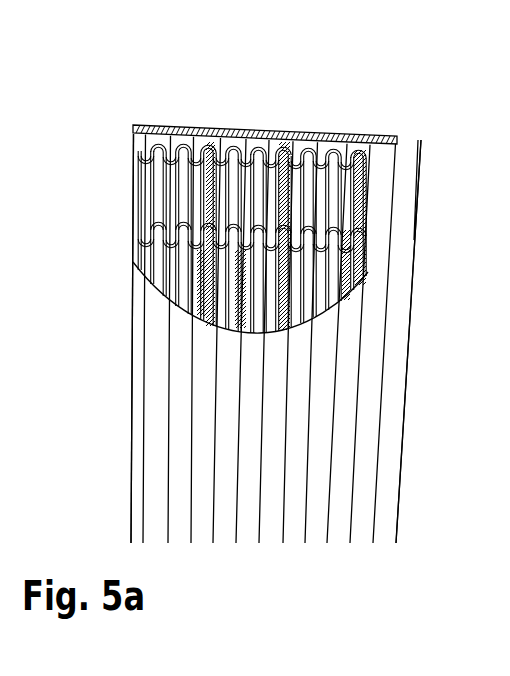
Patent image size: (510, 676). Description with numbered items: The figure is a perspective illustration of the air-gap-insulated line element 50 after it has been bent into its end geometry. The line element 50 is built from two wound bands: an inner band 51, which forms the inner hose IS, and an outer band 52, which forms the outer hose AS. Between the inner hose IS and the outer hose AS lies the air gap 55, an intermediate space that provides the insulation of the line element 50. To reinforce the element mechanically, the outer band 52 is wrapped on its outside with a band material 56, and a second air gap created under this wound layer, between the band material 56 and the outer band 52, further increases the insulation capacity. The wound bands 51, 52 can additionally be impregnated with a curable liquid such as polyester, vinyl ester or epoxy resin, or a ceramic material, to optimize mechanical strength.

The line element 50 is at (299, 56).
The inner band 51 is at (335, 230).
The outer band 52 is at (209, 130).
The air gap 55 is at (270, 180).
The band material 56 is at (403, 210).
The outer hose AS is at (142, 130).
The inner hose IS is at (142, 246).